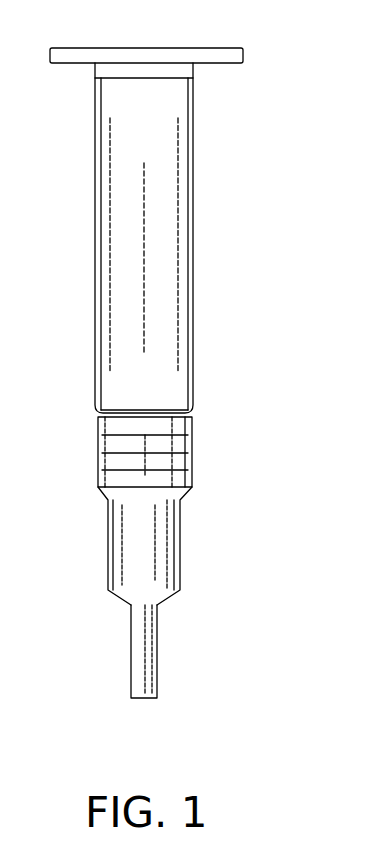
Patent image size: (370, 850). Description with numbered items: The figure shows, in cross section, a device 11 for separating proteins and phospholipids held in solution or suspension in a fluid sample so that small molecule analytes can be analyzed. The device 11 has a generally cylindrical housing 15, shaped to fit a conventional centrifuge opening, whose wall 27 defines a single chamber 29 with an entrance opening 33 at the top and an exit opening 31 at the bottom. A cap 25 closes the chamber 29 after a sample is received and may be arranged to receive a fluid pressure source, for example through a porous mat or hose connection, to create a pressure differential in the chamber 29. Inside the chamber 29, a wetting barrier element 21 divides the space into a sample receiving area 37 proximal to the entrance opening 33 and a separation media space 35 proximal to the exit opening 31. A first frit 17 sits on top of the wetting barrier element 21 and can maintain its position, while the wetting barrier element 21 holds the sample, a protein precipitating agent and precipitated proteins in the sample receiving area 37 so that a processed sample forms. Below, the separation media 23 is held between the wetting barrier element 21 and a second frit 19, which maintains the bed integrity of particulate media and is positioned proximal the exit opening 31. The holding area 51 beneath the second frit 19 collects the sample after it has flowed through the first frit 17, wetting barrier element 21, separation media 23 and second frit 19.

The device 11 is at (202, 176).
The cap element 25 is at (176, 55).
The entrance opening 33 is at (142, 92).
The wall 27 is at (93, 250).
The sample receiving area 37 is at (158, 222).
The chamber 29 is at (158, 282).
The housing 15 is at (193, 362).
The first frit element 17 is at (193, 423).
The wetting barrier element 21 is at (193, 442).
The separation media space 35 is at (105, 468).
The separation media 23 is at (188, 462).
The second frit element 19 is at (192, 478).
The holding area 51 is at (157, 567).
The exit opening 31 is at (143, 687).